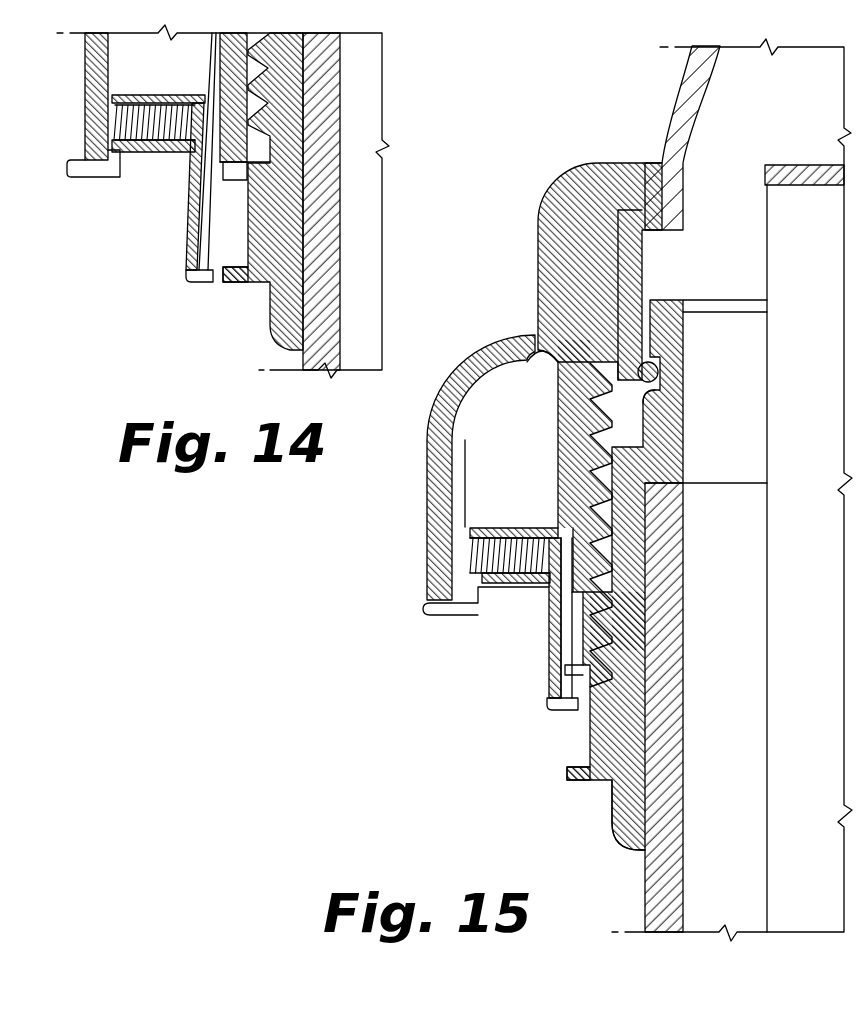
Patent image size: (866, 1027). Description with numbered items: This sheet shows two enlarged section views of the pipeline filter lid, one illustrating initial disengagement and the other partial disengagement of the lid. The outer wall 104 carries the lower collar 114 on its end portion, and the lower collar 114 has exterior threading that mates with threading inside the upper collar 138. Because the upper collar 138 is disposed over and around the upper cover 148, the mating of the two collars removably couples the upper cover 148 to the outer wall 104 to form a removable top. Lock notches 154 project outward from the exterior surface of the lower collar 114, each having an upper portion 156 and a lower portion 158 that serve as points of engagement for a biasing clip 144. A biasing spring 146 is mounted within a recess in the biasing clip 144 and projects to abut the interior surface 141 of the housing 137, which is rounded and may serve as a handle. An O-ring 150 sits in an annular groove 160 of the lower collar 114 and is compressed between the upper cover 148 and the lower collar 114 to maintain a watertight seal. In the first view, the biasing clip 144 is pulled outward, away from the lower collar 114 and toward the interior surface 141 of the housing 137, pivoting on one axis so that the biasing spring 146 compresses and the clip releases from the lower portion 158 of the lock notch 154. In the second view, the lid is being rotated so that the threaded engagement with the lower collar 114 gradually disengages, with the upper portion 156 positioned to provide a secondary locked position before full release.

In FIG. 14, the outer wall 104 is at (333, 280).
In FIG. 15, the outer wall 104 is at (655, 882).
In FIG. 15, the lower collar 114 is at (633, 810).
In FIG. 14, the housing 137 is at (93, 72).
In FIG. 15, the housing 137 is at (463, 373).
In FIG. 15, the upper collar 138 is at (567, 227).
In FIG. 15, the interior surface 141 is at (472, 501).
In FIG. 14, the biasing clip 144 is at (176, 186).
In FIG. 15, the biasing clip 144 is at (578, 665).
In FIG. 14, the biasing spring 146 is at (157, 140).
In FIG. 15, the biasing spring 146 is at (507, 553).
In FIG. 15, the upper cover 148 is at (678, 90).
In FIG. 15, the O-ring 150 is at (653, 370).
In FIG. 15, the lock notch 154 is at (605, 720).
In FIG. 15, the upper portion 156 is at (620, 645).
In FIG. 14, the lower portion 158 is at (227, 277).
In FIG. 15, the lower portion 158 is at (580, 773).
In FIG. 15, the annular groove 160 is at (660, 396).